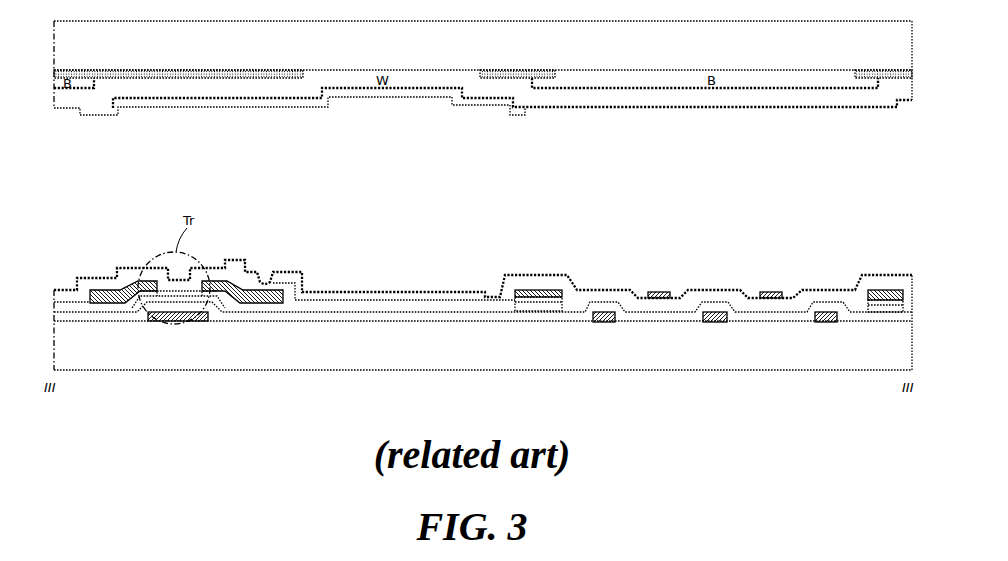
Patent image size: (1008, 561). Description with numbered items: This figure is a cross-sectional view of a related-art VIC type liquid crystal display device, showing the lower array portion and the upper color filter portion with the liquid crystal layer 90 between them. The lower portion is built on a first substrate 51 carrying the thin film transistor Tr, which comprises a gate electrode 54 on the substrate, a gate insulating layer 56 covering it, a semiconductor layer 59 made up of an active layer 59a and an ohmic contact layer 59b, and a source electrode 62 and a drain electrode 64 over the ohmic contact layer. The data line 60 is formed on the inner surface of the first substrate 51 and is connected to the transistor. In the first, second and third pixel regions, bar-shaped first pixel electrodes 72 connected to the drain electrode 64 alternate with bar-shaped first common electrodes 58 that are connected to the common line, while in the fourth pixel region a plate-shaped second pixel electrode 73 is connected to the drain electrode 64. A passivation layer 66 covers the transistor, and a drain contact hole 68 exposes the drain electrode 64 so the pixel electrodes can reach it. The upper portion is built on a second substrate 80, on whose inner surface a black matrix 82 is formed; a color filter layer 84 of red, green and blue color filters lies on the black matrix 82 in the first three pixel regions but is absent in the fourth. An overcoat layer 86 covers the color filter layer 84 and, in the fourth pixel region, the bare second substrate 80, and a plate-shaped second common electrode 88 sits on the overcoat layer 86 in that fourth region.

The first substrate 51 is at (894, 357).
The gate electrode 54 is at (171, 323).
The gate insulating layer 56 is at (363, 318).
The first common electrodes 58 is at (603, 323).
The semiconductor layer 59 is at (211, 330).
The active layer 59a is at (238, 305).
The ohmic contact layer 59b is at (258, 298).
The data line 60 is at (535, 290).
The source electrode 62 is at (140, 280).
The drain electrode 64 is at (210, 282).
The passivation layer 66 is at (404, 300).
The drain contact hole 68 is at (267, 273).
The first pixel electrodes 72 is at (658, 292).
The second pixel electrode 73 is at (358, 290).
The second substrate 80 is at (908, 38).
The black matrix 82 is at (227, 70).
The color filter layer 84 is at (627, 69).
The overcoat layer 86 is at (610, 108).
The second common electrode 88 is at (273, 101).
The liquid crystal layer 90 is at (83, 178).